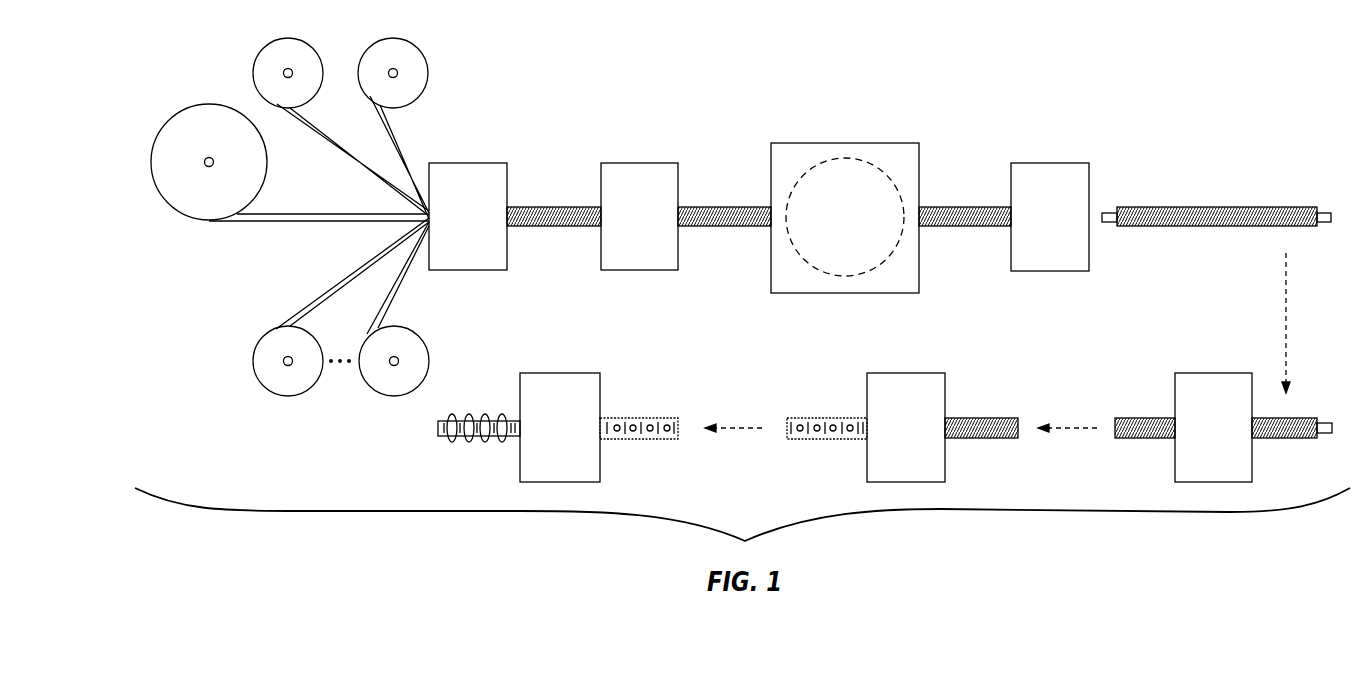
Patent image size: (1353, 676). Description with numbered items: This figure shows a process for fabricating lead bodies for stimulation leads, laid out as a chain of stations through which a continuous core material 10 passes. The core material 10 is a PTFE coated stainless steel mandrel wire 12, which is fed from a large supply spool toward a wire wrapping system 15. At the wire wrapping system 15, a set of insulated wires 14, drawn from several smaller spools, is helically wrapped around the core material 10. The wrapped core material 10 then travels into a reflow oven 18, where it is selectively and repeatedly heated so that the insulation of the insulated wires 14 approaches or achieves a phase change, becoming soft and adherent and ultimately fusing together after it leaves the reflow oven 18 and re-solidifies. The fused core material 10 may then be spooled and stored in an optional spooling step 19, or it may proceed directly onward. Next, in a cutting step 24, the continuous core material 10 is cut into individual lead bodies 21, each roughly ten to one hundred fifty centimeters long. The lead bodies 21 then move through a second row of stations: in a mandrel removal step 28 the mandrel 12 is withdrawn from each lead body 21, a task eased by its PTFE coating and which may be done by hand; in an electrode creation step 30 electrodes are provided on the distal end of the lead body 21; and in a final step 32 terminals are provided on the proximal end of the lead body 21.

The core material 10 is at (565, 207).
The mandrel wire 12 is at (318, 214).
The insulated wires 14 is at (400, 134).
The wire wrapping system 15 is at (482, 229).
The reflow oven 18 is at (653, 229).
The spooling step 19 is at (859, 229).
The lead body 21 is at (1212, 207).
The cutting step 24 is at (1064, 229).
The mandrel removal step 28 is at (1227, 441).
The electrode creation step 30 is at (920, 441).
The terminal step 32 is at (573, 441).